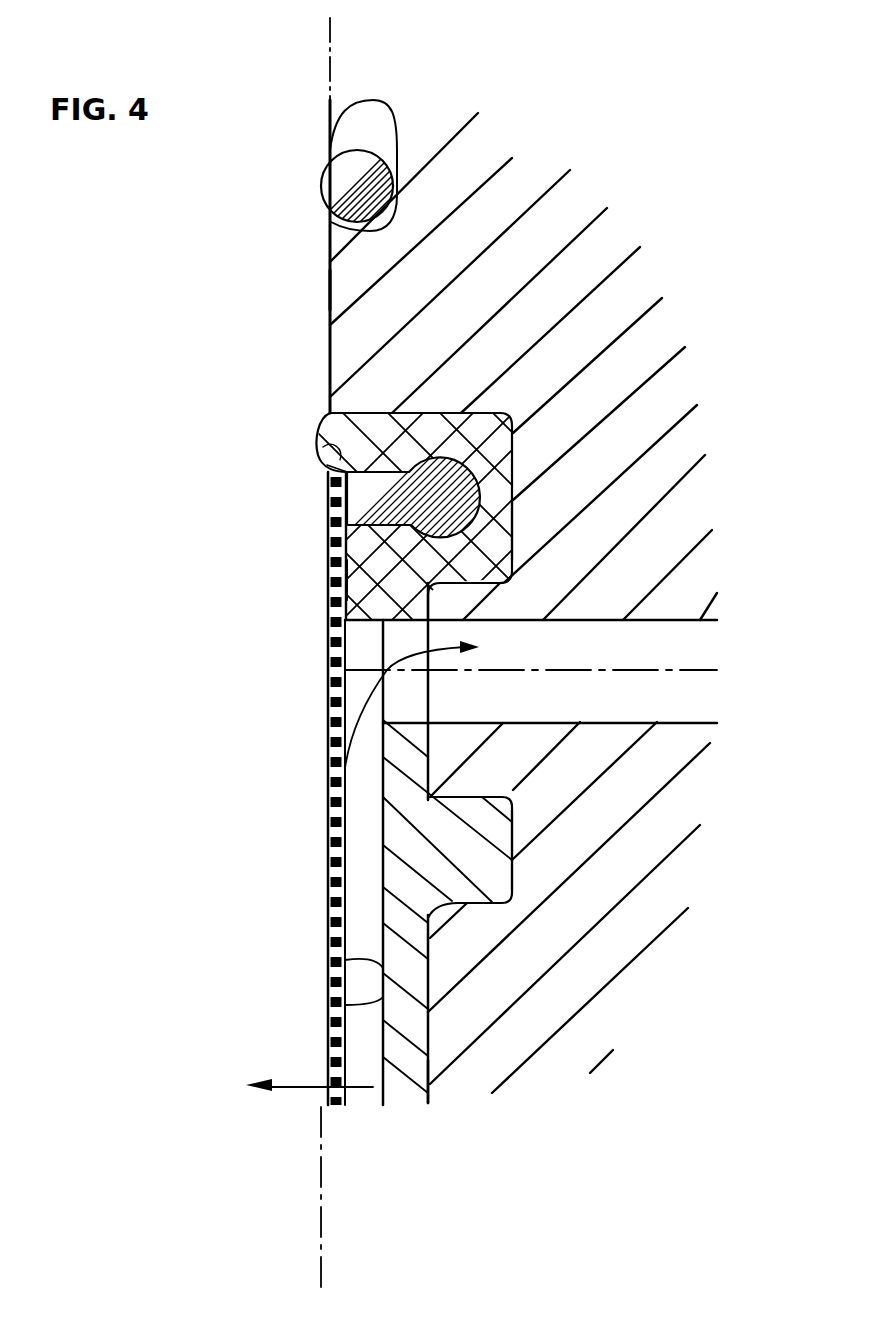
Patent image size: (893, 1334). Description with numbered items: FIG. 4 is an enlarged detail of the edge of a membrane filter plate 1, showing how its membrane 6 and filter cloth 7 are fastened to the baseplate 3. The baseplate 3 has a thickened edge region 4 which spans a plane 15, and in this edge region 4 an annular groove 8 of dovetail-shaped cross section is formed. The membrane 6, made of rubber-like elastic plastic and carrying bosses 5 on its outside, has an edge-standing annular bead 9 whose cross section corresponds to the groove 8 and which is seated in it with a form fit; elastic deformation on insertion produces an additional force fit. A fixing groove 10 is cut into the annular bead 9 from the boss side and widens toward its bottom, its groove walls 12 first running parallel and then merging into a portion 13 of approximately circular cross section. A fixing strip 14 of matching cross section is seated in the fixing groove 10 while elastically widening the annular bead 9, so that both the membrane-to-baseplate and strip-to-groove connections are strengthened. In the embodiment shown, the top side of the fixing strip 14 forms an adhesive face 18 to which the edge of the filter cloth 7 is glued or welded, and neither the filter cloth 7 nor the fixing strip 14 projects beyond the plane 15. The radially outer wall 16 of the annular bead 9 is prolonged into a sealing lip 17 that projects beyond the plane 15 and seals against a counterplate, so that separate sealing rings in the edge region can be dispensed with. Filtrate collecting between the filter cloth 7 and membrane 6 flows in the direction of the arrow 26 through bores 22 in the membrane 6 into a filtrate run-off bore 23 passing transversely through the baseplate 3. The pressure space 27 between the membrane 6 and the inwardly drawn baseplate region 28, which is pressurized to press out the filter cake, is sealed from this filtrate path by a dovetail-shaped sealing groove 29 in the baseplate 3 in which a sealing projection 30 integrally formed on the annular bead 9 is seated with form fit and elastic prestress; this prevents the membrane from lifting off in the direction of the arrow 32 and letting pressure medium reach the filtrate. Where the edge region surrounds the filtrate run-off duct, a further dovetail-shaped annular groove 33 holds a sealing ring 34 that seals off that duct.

The membrane filter plate 1 is at (735, 175).
The baseplate 3 is at (352, 268).
The thickened edge region 4 is at (327, 290).
The bosses 5 is at (360, 1098).
The membrane 6 is at (403, 830).
The filter cloth 7 is at (328, 887).
The groove 8 is at (481, 588).
The annular bead 9 is at (385, 425).
The fixing groove 10 is at (485, 497).
The groove walls 12 is at (317, 443).
The portion of approximately circular cross section 13 is at (515, 545).
The fixing strip 14 is at (497, 470).
The plane 15 is at (333, 40).
The radially outer wall 16 is at (518, 240).
The sealing lip 17 is at (327, 465).
The adhesive face 18 is at (332, 518).
The bores 22 is at (408, 722).
The filtrate run-off bore 23 is at (690, 647).
The arrow 26 is at (297, 772).
The pressure space 27 is at (437, 1095).
The inwardly drawn baseplate region 28 is at (440, 1087).
The sealing groove 29 is at (515, 813).
The sealing projection 30 is at (482, 866).
The arrow 32 is at (297, 1085).
The annular groove 33 is at (380, 145).
The sealing ring 34 is at (320, 176).